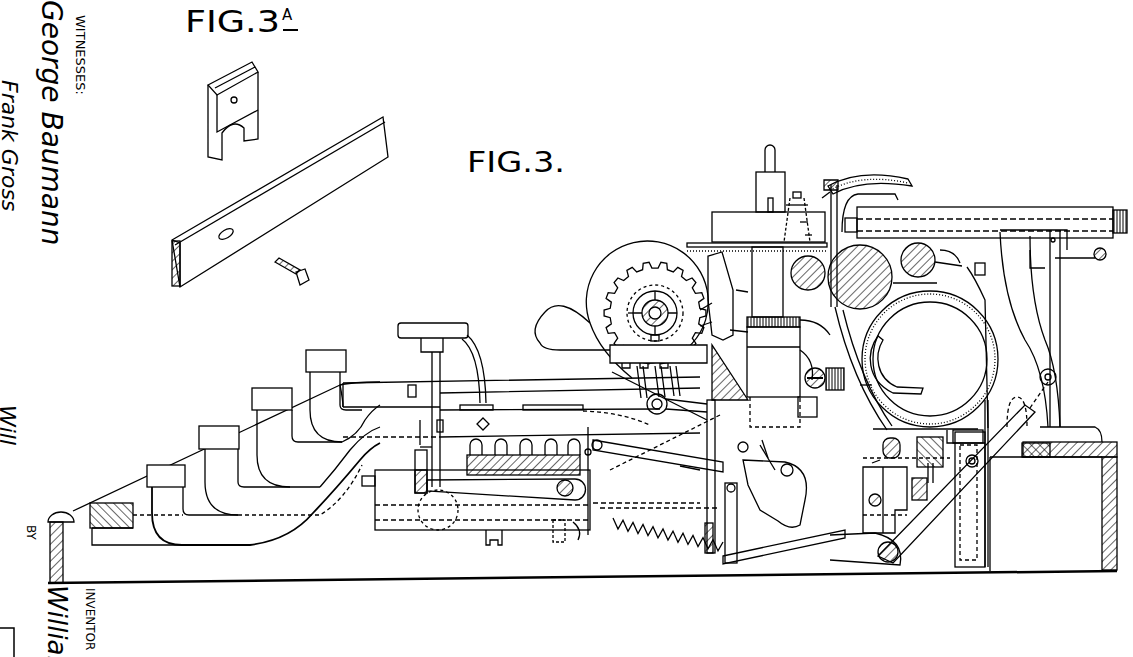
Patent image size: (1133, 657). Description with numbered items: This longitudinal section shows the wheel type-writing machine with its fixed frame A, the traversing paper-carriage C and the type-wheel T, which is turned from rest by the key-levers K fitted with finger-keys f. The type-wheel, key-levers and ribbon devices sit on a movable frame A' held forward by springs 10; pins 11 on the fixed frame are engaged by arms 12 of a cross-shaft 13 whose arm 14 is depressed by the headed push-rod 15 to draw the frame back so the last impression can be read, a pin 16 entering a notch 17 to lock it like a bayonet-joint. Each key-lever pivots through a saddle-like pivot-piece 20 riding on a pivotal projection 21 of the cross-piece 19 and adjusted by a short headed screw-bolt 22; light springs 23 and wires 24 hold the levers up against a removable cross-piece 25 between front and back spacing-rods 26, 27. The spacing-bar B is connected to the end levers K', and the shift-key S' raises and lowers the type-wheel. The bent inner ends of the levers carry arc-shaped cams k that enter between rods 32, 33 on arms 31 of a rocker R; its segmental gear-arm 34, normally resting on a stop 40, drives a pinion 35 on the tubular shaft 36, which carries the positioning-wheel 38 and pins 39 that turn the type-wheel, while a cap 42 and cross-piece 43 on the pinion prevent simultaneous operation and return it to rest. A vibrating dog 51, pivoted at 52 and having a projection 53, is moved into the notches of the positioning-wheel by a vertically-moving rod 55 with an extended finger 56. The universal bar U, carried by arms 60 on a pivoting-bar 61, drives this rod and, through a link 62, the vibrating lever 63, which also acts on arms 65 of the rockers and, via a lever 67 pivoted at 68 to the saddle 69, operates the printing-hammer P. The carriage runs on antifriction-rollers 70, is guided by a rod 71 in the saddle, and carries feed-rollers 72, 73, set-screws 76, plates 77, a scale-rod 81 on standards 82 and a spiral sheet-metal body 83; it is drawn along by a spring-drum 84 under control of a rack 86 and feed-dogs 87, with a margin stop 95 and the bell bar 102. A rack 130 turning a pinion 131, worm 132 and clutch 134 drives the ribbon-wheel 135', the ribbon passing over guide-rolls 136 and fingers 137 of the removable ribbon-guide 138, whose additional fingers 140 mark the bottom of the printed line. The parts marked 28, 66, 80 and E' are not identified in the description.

In FIG. 3A, the pivot-piece 20 is at (245, 111).
In FIG. 3, the pivot-piece 20 is at (521, 400).
In FIG. 3A, the short headed screw-bolt 22 is at (299, 271).
In FIG. 3, the short headed screw-bolt 22 is at (491, 425).
In FIG. 3A, the key-levers K is at (280, 202).
In FIG. 3, the key-levers K is at (256, 458).
In FIG. 3, the end levers K' is at (137, 536).
In FIG. 3, the finger-keys f is at (246, 418).
In FIG. 3, the spacing-bar B is at (111, 509).
In FIG. 3, the fixed frame A is at (582, 490).
In FIG. 3, the movable frame A' is at (646, 492).
In FIG. 3, the shift-key S' is at (442, 349).
In FIG. 3, the headed push-rod 15 is at (432, 363).
In FIG. 3, the pin on push-rod 16 is at (443, 426).
In FIG. 3, the notch 17 is at (415, 447).
In FIG. 3, the cross-piece 19 is at (598, 455).
In FIG. 3, the pivotal projection 21 is at (523, 457).
In FIG. 3, the light springs 23 is at (506, 543).
In FIG. 3, the wires 24 is at (598, 481).
In FIG. 3, the removable cross-piece 25 is at (408, 390).
In FIG. 3, the front set of spacing-rods 26 is at (408, 432).
In FIG. 3, the back set of spacing-rods 27 is at (660, 504).
In FIG. 3, the vertical bar 28 is at (706, 476).
In FIG. 3, the springs 10 is at (668, 536).
In FIG. 3, the pins 11 is at (581, 538).
In FIG. 3, the arms 12 is at (561, 534).
In FIG. 3, the cross-shaft 13 is at (557, 488).
In FIG. 3, the arm 14 is at (506, 489).
In FIG. 3, the downwardly-extending arms 31 is at (770, 442).
In FIG. 3, the rocker rod 32 is at (795, 468).
In FIG. 3, the rocker rod 33 is at (745, 440).
In FIG. 3, the segmental gear-arm 34 is at (797, 360).
In FIG. 3, the pinion 35 is at (773, 377).
In FIG. 3, the upright tubular shaft 36 is at (767, 282).
In FIG. 3, the positioning-wheel 38 is at (767, 265).
In FIG. 3, the pins 39 is at (770, 178).
In FIG. 3, the stop 40 is at (824, 370).
In FIG. 3, the cap or segmental plate 42 is at (773, 316).
In FIG. 3, the cross-piece 43 is at (813, 320).
In FIG. 3, the vibrating dog 51 is at (720, 296).
In FIG. 3, the pivot of dog 52 is at (744, 292).
In FIG. 3, the projection on dog 53 is at (698, 309).
In FIG. 3, the vertically-moving rod 55 is at (697, 326).
In FIG. 3, the extended finger 56 is at (739, 330).
In FIG. 3, the arms 60 is at (658, 443).
In FIG. 3, the pivoting-bar 61 is at (602, 436).
In FIG. 3, the link 62 is at (738, 530).
In FIG. 3, the vibrating lever 63 is at (885, 473).
In FIG. 3, the arms 65 is at (807, 407).
In FIG. 3, the pivot 66 is at (865, 549).
In FIG. 3, the lever 67 is at (1013, 398).
In FIG. 3, the pivot 68 is at (1057, 377).
In FIG. 3, the saddle 69 is at (1069, 394).
In FIG. 3, the antifriction-rollers 70 is at (922, 468).
In FIG. 3, the rod 71 is at (917, 253).
In FIG. 3, the front feed-roller 72 is at (808, 279).
In FIG. 3, the rear feed-roller 73 is at (860, 284).
In FIG. 3, the set-screws 76 is at (988, 268).
In FIG. 3, the plates 77 is at (915, 291).
In FIG. 3, the arm 80 is at (870, 206).
In FIG. 3, the scale-rod 81 is at (831, 233).
In FIG. 3, the short standards 82 is at (821, 199).
In FIG. 3, the sheet-metal body 83 is at (921, 368).
In FIG. 3, the spring-drum 84 is at (985, 541).
In FIG. 3, the rack 86 is at (866, 461).
In FIG. 3, the feed-dogs 87 is at (885, 500).
In FIG. 3, the stop 95 is at (883, 444).
In FIG. 3, the bar 102 is at (1030, 457).
In FIG. 3, the rack 130 is at (835, 407).
In FIG. 3, the pinion 131 is at (876, 384).
In FIG. 3, the worm 132 is at (658, 382).
In FIG. 3, the movable clutch 134 is at (619, 312).
In FIG. 3, the left-hand ribbon-wheel 135' is at (621, 309).
In FIG. 3, the flanged conical guide-rolls 136 is at (796, 211).
In FIG. 3, the fingers 137 is at (818, 231).
In FIG. 3, the removable ribbon-guide 138 is at (655, 312).
In FIG. 3, the additional fingers 140 is at (814, 215).
In FIG. 3, the traversing carriage C is at (930, 358).
In FIG. 3, the arm E' is at (870, 175).
In FIG. 3, the printing-hammer P is at (986, 237).
In FIG. 3, the rocker R is at (774, 453).
In FIG. 3, the type-wheel T is at (757, 231).
In FIG. 3, the universal bar U is at (690, 461).
In FIG. 3, the arc-shaped cams k is at (774, 493).